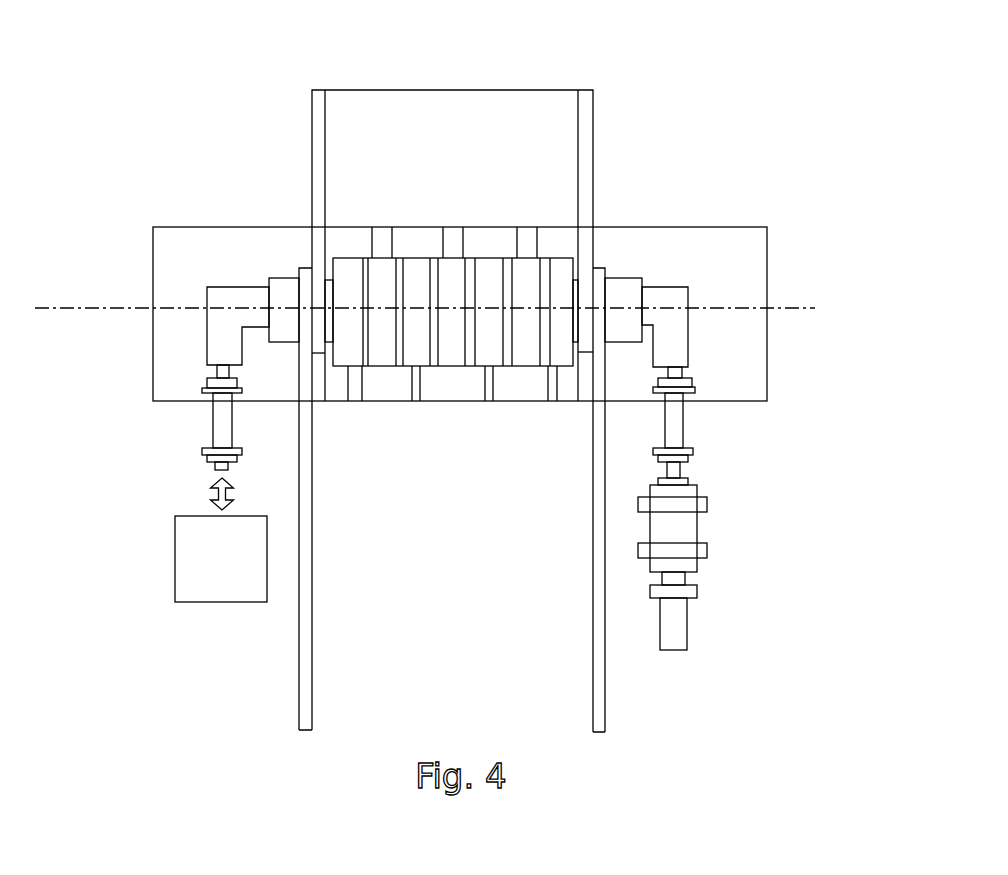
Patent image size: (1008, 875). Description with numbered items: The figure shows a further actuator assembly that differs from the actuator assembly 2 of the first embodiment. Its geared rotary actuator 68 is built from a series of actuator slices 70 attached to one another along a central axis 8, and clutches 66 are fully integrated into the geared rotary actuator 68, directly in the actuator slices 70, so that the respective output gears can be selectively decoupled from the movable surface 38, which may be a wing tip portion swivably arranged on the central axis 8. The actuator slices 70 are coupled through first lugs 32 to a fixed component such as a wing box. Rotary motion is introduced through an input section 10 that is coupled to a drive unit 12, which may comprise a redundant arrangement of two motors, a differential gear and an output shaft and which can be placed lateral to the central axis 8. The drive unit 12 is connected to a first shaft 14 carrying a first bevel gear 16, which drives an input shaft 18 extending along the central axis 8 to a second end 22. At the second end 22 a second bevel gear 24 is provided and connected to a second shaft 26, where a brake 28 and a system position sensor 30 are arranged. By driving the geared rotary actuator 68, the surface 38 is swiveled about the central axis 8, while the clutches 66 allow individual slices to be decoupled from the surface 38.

The actuator assembly 2 is at (667, 125).
The central axis 8 is at (793, 307).
The input section 10 is at (225, 250).
The drive unit 12 is at (192, 558).
The first shaft 14 is at (217, 423).
The first bevel gear 16 is at (223, 327).
The input shaft 18 is at (243, 300).
The second end 22 is at (613, 250).
The second bevel gear 24 is at (675, 300).
The second shaft 26 is at (670, 422).
The brake 28 is at (680, 525).
The system position sensor 30 is at (687, 623).
The first lugs 32 is at (357, 390).
The movable surface 38 is at (557, 103).
The clutches 66 is at (373, 273).
The geared rotary actuator 68 is at (568, 158).
The actuator slices 70 is at (383, 375).